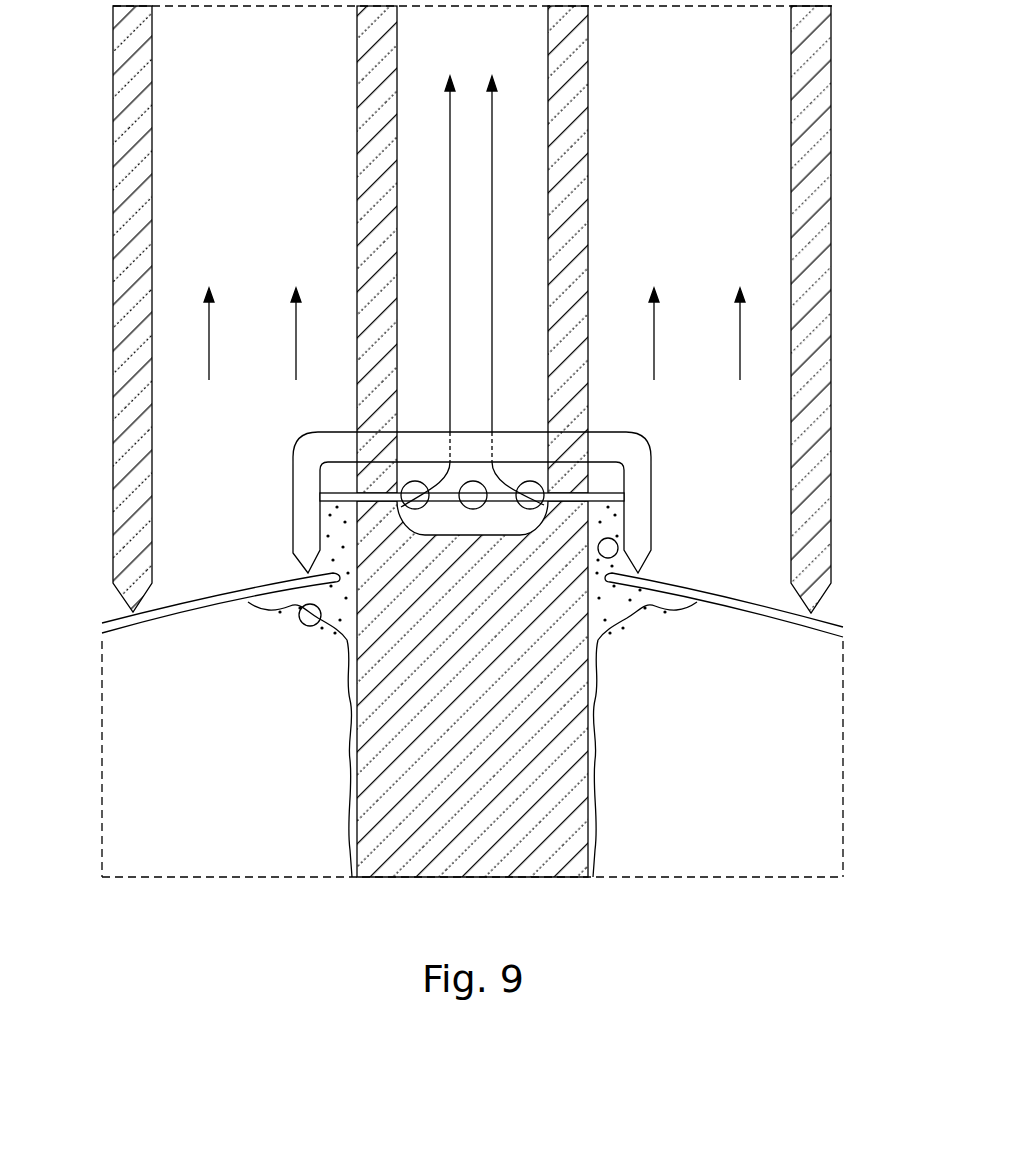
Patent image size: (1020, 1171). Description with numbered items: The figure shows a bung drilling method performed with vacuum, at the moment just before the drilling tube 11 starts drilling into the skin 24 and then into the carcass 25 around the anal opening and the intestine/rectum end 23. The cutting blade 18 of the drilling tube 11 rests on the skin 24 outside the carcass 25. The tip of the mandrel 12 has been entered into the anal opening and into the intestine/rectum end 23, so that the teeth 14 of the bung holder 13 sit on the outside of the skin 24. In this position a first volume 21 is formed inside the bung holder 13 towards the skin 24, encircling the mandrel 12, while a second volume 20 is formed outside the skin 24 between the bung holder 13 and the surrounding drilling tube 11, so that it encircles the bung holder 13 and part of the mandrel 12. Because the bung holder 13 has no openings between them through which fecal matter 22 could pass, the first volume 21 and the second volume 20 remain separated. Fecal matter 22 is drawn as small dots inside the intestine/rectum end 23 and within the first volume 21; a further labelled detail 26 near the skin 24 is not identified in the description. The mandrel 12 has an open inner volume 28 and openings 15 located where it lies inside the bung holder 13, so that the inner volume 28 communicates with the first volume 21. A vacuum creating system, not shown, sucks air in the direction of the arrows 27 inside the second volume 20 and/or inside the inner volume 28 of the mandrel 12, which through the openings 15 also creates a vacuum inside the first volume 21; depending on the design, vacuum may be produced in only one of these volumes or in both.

The drilling tube 11 is at (130, 202).
The mandrel 12 is at (472, 441).
The bung holder 13 is at (632, 458).
The teeth 14 is at (616, 556).
The openings 15 is at (622, 499).
The cutting blade 18 is at (820, 615).
The second volume 20 is at (475, 125).
The first volume 21 is at (330, 489).
The fecal matter 22 is at (347, 625).
The intestine/rectum end 23 is at (598, 790).
The skin 24 is at (740, 603).
The carcass 25 is at (472, 759).
The sealing compound 26 is at (300, 623).
The arrows 27 is at (474, 334).
The inner volume 28 is at (472, 276).